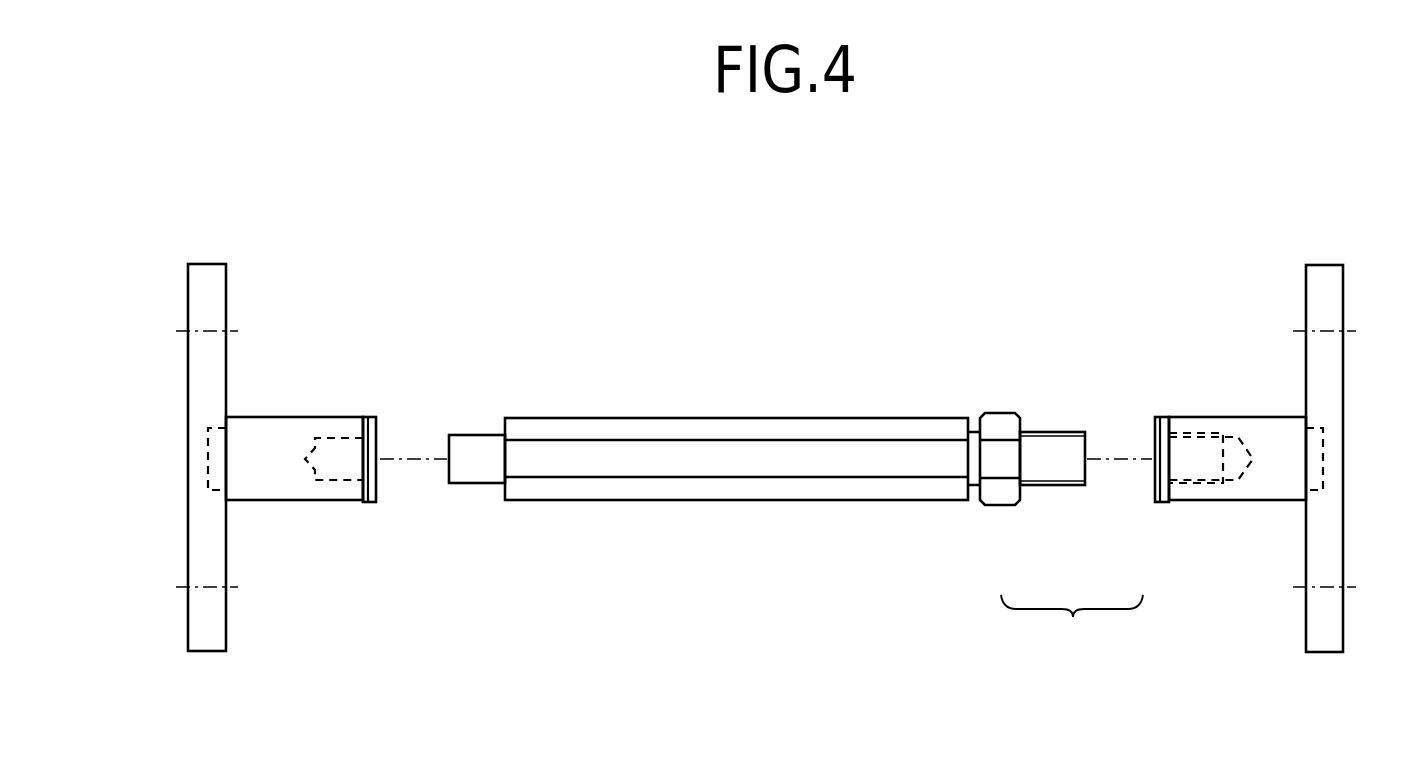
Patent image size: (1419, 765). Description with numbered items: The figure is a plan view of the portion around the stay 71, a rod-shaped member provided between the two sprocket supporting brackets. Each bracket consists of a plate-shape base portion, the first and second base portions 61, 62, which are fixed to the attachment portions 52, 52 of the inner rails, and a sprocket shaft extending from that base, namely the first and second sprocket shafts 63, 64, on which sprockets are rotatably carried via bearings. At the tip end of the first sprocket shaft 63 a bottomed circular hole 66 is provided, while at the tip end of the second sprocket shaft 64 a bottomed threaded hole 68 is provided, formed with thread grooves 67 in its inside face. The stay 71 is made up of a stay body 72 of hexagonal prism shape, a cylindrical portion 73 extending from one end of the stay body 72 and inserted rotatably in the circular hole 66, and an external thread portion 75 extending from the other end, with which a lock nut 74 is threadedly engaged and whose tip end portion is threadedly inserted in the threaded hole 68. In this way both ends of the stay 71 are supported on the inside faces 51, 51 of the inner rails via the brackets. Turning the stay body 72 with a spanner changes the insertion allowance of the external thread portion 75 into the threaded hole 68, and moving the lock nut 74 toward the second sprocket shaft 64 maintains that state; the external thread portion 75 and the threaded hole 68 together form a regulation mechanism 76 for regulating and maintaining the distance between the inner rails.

The inside face 51 is at (336, 312).
The attachment portion 52 is at (1161, 265).
The first base portion 61 is at (202, 365).
The second base portion 62 is at (1325, 372).
The first sprocket shaft 63 is at (275, 417).
The second sprocket shaft 64 is at (1233, 417).
The circular hole 66 is at (328, 455).
The thread grooves 67 is at (1197, 443).
The threaded hole 68 is at (1140, 495).
The stay 71 is at (836, 298).
The stay body 72 is at (703, 420).
The cylindrical portion 73 is at (481, 440).
The lock nut 74 is at (1000, 413).
The external thread portion 75 is at (1047, 495).
The regulation mechanism 76 is at (1072, 626).